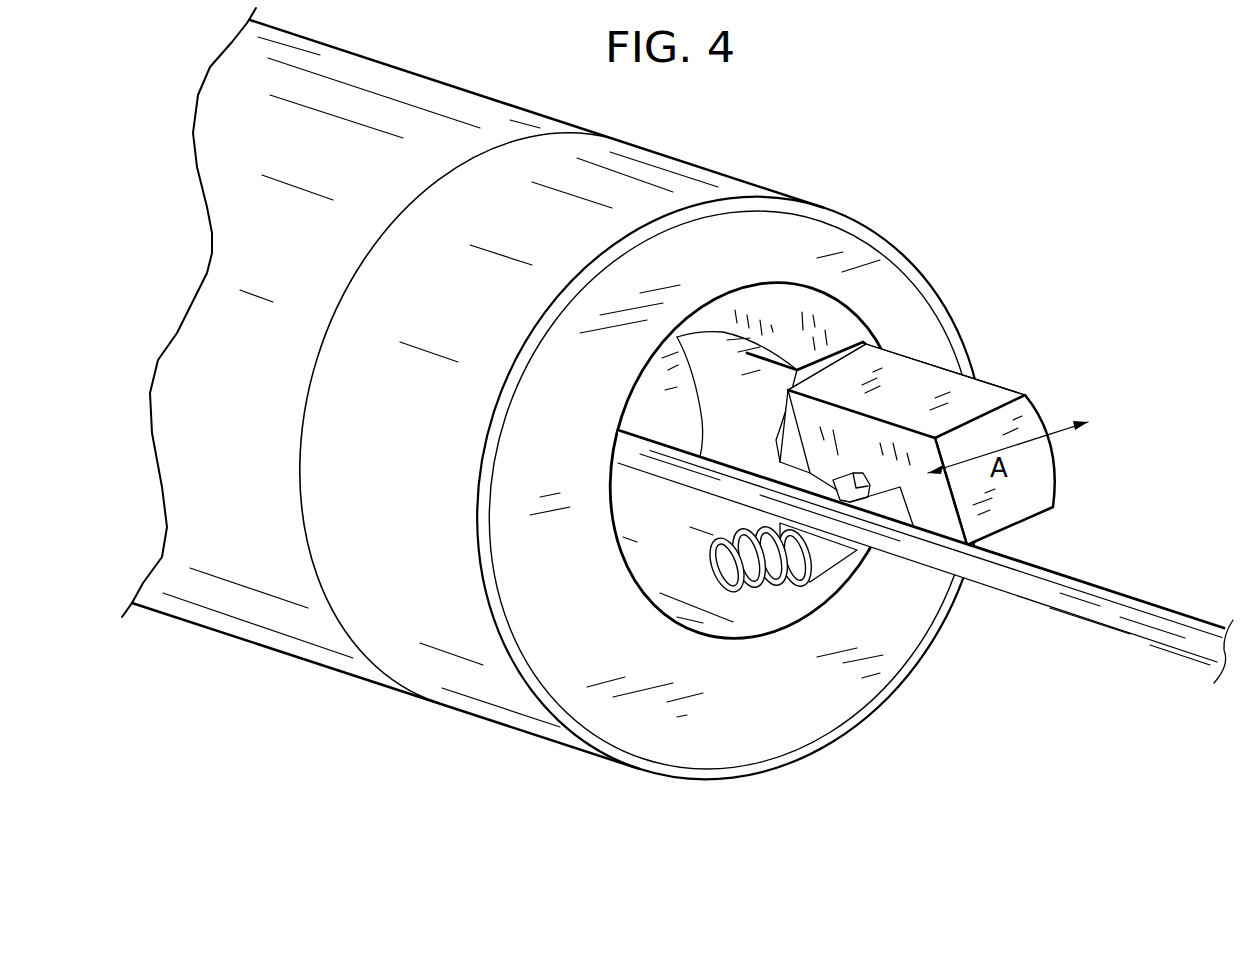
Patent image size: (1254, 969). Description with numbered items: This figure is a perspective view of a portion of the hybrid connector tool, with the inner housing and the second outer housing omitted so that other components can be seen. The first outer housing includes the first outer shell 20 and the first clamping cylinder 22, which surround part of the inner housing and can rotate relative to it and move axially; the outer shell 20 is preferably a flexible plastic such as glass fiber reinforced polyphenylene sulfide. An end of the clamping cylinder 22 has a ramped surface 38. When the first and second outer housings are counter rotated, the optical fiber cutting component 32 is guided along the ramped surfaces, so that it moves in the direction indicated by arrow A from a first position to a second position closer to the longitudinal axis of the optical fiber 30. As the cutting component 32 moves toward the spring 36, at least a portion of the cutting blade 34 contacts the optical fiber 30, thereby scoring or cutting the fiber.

The first outer shell 20 is at (330, 658).
The first clamping cylinder 22 is at (575, 748).
The optical fiber 30 is at (1063, 605).
The optical fiber cutting component 32 is at (1003, 397).
The cutting blade 34 is at (840, 493).
The spring 36 is at (780, 595).
The ramped surface 38 is at (823, 318).